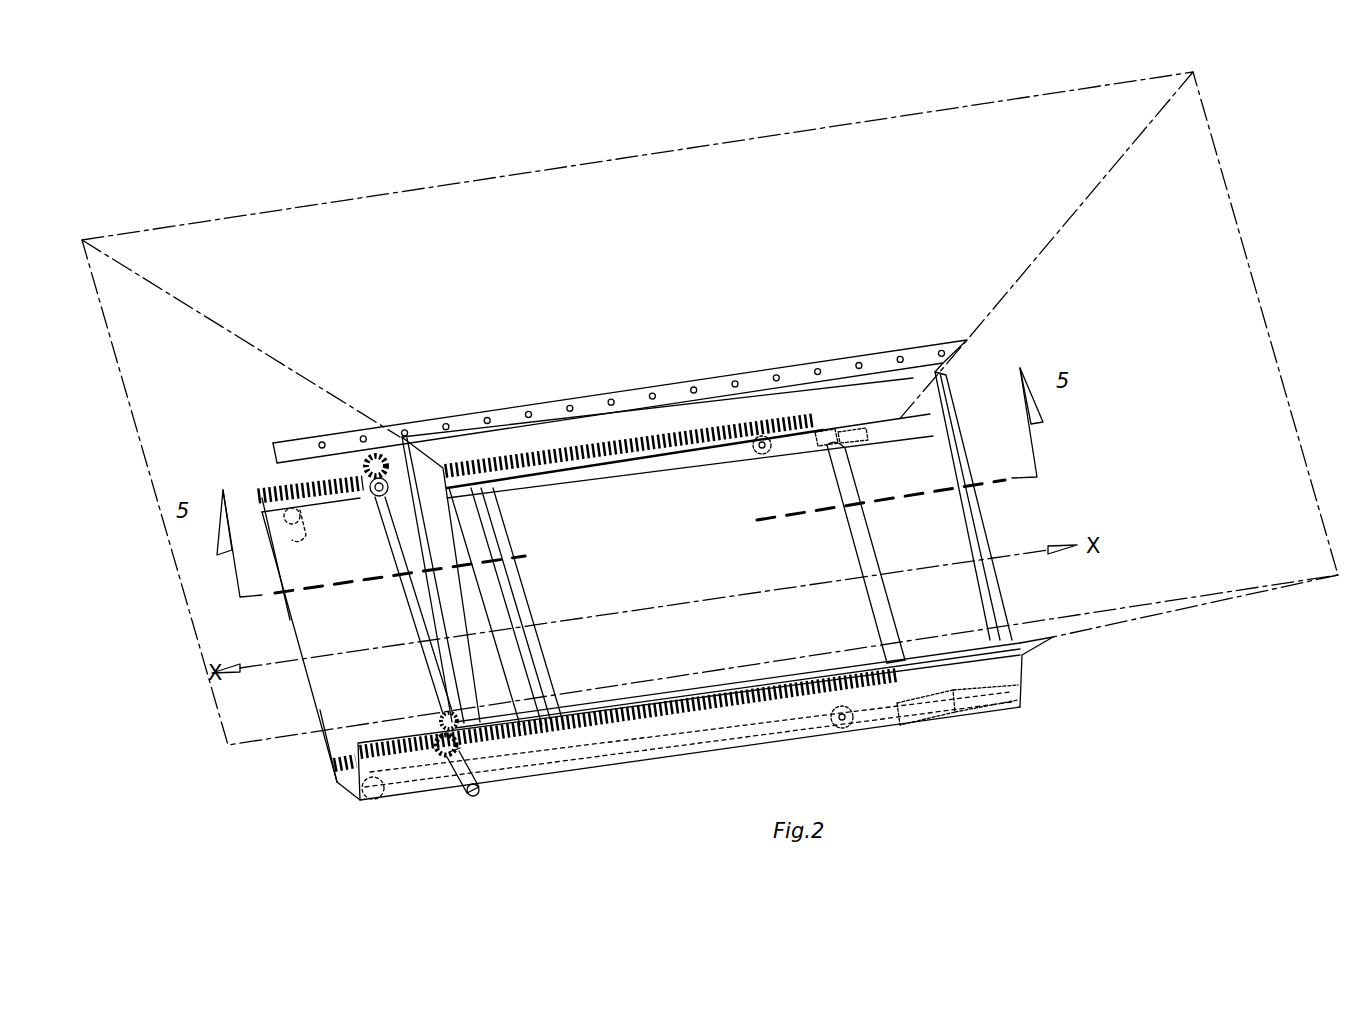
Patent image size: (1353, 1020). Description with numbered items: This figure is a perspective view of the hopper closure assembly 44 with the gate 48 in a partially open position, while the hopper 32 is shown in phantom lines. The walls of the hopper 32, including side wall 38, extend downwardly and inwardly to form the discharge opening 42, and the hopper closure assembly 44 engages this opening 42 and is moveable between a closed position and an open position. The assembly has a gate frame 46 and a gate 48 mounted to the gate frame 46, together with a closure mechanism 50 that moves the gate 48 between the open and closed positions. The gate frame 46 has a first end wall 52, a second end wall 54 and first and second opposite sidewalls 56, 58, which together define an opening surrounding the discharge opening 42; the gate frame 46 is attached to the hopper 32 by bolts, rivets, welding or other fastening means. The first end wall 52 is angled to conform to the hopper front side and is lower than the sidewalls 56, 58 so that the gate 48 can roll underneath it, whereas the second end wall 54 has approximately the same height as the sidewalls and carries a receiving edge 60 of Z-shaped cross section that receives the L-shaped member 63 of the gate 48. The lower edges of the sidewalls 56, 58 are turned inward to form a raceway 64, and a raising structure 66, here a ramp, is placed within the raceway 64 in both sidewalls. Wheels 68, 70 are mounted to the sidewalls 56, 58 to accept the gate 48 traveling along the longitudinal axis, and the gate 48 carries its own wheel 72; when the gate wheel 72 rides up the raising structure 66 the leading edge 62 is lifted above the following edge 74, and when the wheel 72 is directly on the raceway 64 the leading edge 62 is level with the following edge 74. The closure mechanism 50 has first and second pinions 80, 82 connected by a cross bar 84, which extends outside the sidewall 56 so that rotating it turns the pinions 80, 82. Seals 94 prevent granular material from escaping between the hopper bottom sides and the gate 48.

The hopper 32 is at (1170, 182).
The side wall 38 is at (680, 258).
The discharge opening 42 is at (890, 558).
The hopper closure assembly 44 is at (240, 386).
The gate frame 46 is at (290, 420).
The gate 48 is at (686, 580).
The closure mechanism 50 is at (395, 602).
The first end wall 52 is at (470, 600).
The second end wall 54 is at (985, 528).
The first sidewall 56 is at (768, 730).
The second sidewall 58 is at (598, 402).
The receiving edge 60 is at (942, 434).
The leading edge 62 is at (842, 466).
The L-shaped member 63 is at (880, 598).
The raceway 64 is at (688, 758).
The raising structure 66 is at (828, 446).
The wheel 68 is at (306, 536).
The wheel 70 is at (372, 500).
The wheel 72 is at (760, 455).
The following edge 74 is at (300, 638).
The first pinion 80 is at (447, 714).
The second pinion 82 is at (362, 464).
The cross bar 84 is at (438, 556).
The seals 94 is at (565, 490).